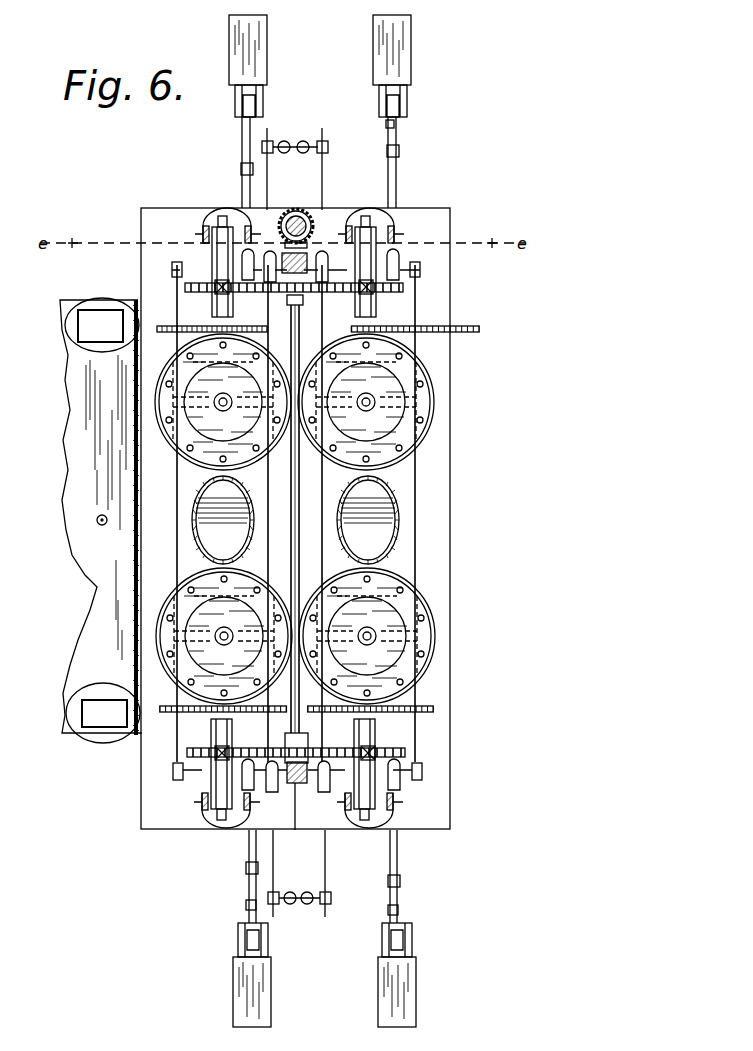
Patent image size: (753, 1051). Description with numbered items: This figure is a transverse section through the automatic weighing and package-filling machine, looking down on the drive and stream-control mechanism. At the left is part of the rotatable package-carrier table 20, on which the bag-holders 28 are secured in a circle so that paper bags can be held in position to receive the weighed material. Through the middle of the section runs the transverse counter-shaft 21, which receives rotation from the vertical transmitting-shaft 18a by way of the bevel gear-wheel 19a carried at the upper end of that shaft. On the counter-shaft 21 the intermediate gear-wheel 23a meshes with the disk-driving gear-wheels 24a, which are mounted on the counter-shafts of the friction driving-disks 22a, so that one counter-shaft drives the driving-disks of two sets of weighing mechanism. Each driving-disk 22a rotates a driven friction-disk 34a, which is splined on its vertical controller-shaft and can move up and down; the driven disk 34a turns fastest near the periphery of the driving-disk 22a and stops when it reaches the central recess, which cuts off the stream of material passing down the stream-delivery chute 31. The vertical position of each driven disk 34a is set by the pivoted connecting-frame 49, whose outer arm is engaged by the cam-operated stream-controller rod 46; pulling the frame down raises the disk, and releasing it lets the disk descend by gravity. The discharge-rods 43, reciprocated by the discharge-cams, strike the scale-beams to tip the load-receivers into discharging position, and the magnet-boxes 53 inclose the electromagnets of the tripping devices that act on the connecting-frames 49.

The vertical transmitting-shaft 18a is at (310, 221).
The bevel gear-wheel 19a is at (294, 212).
The package-carrier table 20 is at (73, 677).
The transverse counter-shaft 21 is at (270, 512).
The friction driving-disk 22a is at (241, 330).
The intermediate gear-wheel 23a is at (290, 300).
The disk-driving gear-wheel 24a is at (185, 762).
The bag-holder 28 is at (88, 713).
The stream-delivery chute 31 is at (235, 541).
The driven friction-disk 34a is at (424, 372).
The discharge-rod 43 is at (304, 141).
The stream-controller rod 46 is at (241, 168).
The connecting-frame 49 is at (182, 294).
The magnet-box 53 is at (258, 52).